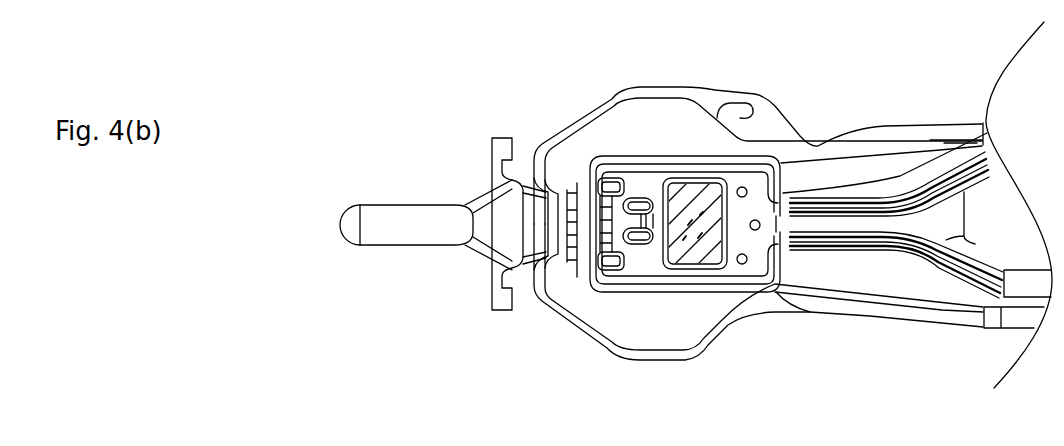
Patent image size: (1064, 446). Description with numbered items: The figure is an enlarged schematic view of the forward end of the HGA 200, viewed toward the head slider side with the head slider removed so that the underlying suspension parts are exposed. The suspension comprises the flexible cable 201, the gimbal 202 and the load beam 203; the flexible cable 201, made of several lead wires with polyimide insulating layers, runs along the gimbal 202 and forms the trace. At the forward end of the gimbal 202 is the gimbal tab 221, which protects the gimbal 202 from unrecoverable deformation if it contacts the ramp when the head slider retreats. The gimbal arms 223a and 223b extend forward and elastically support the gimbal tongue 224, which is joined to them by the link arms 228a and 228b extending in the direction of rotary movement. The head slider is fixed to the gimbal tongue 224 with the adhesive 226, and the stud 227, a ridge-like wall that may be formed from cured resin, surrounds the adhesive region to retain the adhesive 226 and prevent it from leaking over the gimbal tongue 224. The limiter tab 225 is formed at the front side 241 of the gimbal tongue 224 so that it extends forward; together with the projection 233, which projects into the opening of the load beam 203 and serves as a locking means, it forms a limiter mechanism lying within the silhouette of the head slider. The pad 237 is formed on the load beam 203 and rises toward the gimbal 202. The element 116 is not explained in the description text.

The HGA 200 is at (296, 259).
The plug portion 116 is at (383, 205).
The load beam 203 is at (447, 248).
The gimbal tab 221 is at (503, 138).
The gimbal arm 223a is at (700, 89).
The gimbal arm 223b is at (667, 366).
The projection 233 is at (627, 278).
The adhesive 226 is at (712, 272).
The gimbal tongue 224 is at (617, 349).
The limiter tab 225 is at (637, 200).
The front side 241 is at (648, 197).
The pad 237 is at (735, 205).
The link arm 228a is at (750, 105).
The link arm 228b is at (745, 330).
The stud 227 is at (783, 158).
The flexible cable 201 is at (957, 192).
The gimbal 202 is at (945, 328).